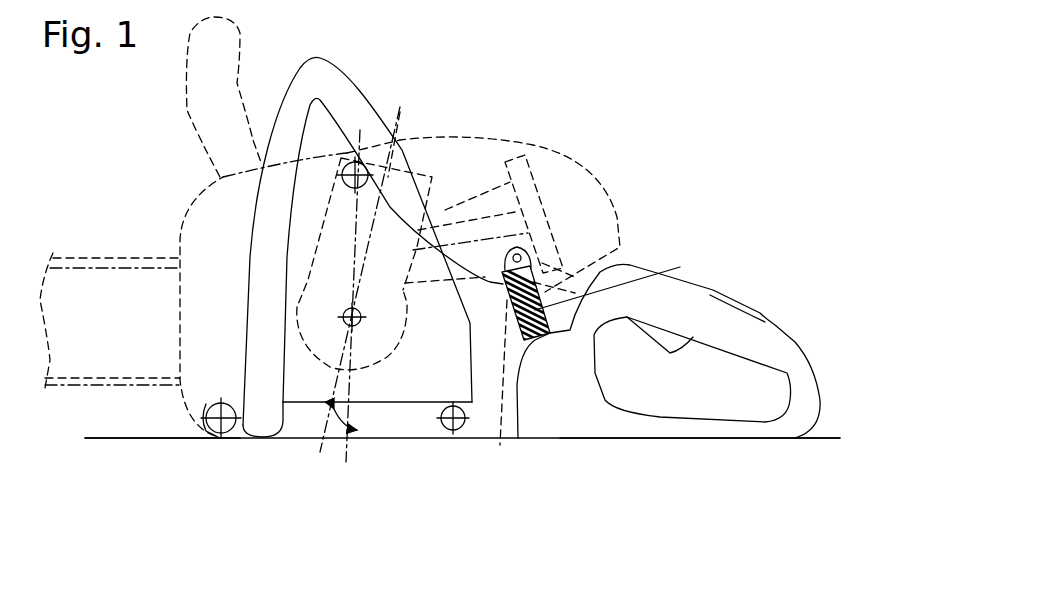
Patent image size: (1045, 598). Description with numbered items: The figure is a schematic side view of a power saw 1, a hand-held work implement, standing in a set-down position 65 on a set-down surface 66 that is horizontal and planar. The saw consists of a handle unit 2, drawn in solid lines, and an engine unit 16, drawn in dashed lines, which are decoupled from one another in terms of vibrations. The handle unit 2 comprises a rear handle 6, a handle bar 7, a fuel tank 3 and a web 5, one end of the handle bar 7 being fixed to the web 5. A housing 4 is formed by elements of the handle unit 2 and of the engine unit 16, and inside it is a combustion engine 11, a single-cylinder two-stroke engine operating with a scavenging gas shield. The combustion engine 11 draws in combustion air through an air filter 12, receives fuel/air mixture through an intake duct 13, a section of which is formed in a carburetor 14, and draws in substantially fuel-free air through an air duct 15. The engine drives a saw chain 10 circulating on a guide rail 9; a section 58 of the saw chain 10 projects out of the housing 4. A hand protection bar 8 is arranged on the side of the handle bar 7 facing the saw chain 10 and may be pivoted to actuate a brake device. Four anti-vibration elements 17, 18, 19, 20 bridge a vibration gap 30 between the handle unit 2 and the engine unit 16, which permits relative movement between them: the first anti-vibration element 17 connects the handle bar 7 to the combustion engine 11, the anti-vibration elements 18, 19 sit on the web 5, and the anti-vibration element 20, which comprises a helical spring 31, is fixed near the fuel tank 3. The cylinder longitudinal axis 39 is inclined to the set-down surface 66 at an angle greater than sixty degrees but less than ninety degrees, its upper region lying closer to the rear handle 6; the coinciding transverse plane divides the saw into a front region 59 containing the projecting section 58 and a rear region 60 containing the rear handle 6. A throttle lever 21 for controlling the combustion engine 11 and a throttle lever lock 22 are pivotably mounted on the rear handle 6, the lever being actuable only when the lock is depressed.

The power saw 1 is at (678, 84).
The handle unit 2 is at (603, 433).
The fuel tank 3 is at (553, 420).
The housing 4 is at (203, 193).
The web 5 is at (377, 430).
The rear handle 6 is at (707, 303).
The handle bar 7 is at (303, 73).
The hand protection bar 8 is at (200, 80).
The guide rail 9 is at (123, 283).
The saw chain 10 is at (83, 257).
The combustion engine 11 is at (320, 347).
The air filter 12 is at (528, 163).
The intake duct 13 is at (423, 270).
The carburetor 14 is at (527, 237).
The air duct 15 is at (463, 213).
The engine unit 16 is at (472, 137).
The first anti-vibration element 17 is at (358, 163).
The anti-vibration element 18 is at (454, 431).
The anti-vibration element 19 is at (219, 430).
The anti-vibration element 20 is at (621, 283).
The throttle lever 21 is at (671, 355).
The throttle lever lock 22 is at (751, 300).
The vibration gap 30 is at (625, 252).
The helical spring 31 is at (500, 386).
The cylinder longitudinal axis 39 is at (398, 127).
The section of the saw chain 58 is at (70, 385).
The front region 59 is at (233, 475).
The rear region 60 is at (419, 480).
The set-down position 65 is at (112, 155).
The set-down surface 66 is at (143, 437).